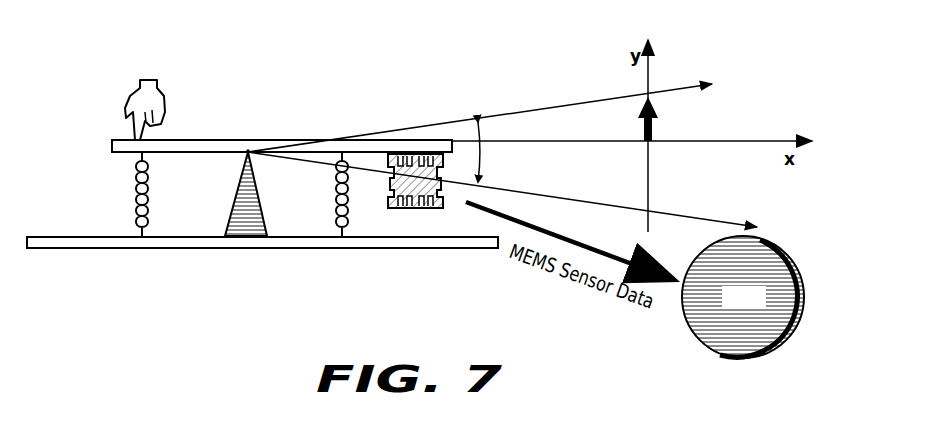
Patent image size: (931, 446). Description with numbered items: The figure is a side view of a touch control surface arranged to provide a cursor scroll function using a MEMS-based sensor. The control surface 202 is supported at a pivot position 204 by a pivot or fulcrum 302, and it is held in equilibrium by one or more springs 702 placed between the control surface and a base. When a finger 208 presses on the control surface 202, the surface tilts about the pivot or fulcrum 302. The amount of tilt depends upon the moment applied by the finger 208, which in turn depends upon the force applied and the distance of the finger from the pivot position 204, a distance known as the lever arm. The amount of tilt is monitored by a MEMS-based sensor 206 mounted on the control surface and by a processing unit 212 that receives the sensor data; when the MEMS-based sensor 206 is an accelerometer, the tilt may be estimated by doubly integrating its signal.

The control surface 202 is at (333, 140).
The pivot position 204 is at (247, 140).
The MEMS-based sensor 206 is at (415, 165).
The finger 208 is at (136, 96).
The processing unit 212 is at (745, 360).
The pivot or fulcrum 302 is at (231, 212).
The springs 702 is at (149, 205).